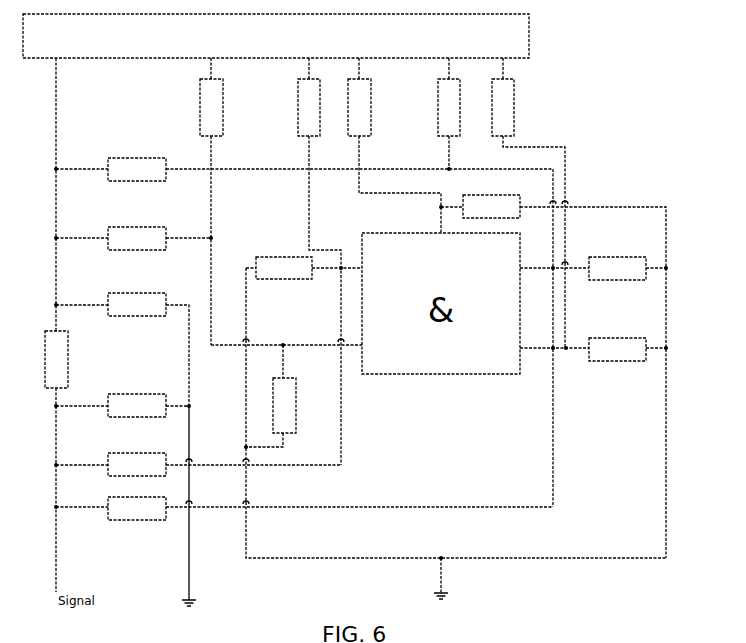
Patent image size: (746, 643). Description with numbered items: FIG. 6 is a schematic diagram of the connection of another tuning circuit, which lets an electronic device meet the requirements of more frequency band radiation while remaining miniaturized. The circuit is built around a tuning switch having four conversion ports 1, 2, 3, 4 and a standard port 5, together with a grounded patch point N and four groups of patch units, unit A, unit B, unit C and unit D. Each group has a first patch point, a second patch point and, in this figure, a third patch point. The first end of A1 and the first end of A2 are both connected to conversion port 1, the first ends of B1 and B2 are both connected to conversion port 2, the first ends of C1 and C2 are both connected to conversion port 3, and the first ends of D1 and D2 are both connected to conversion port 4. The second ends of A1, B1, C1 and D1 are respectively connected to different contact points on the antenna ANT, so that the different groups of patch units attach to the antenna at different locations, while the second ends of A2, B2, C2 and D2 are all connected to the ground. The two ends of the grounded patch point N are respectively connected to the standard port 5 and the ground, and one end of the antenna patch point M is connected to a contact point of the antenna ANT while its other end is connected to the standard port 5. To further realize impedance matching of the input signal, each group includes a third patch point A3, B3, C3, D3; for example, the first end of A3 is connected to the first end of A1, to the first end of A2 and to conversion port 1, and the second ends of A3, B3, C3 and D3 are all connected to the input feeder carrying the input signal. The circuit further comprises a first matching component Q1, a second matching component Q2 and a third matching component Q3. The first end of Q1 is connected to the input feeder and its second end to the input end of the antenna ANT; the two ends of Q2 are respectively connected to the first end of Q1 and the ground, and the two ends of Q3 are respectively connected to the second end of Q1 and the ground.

The antenna ANT is at (276, 36).
The first patch point of unit A A1 is at (211, 201).
The first patch point of unit B B1 is at (319, 261).
The antenna patch point M is at (394, 145).
The first patch point of unit C C1 is at (449, 113).
The first patch point of unit D D1 is at (528, 203).
The third patch point of unit C C3 is at (304, 332).
The third patch point of unit A A3 is at (133, 238).
The second matching component Q2 is at (122, 349).
The first matching component Q1 is at (56, 325).
The third matching component Q3 is at (122, 405).
The third patch point of unit B B3 is at (198, 464).
The third patch point of unit D D3 is at (304, 508).
The second patch point of unit B B2 is at (438, 407).
The second patch point of unit A A2 is at (271, 396).
The grounded patch point N is at (553, 376).
The second patch point of unit C C2 is at (593, 268).
The second patch point of unit D D2 is at (593, 349).
The conversion port 1 is at (370, 345).
The conversion port 2 is at (370, 268).
The conversion port 3 is at (510, 268).
The conversion port 4 is at (510, 348).
The standard port 5 is at (439, 245).